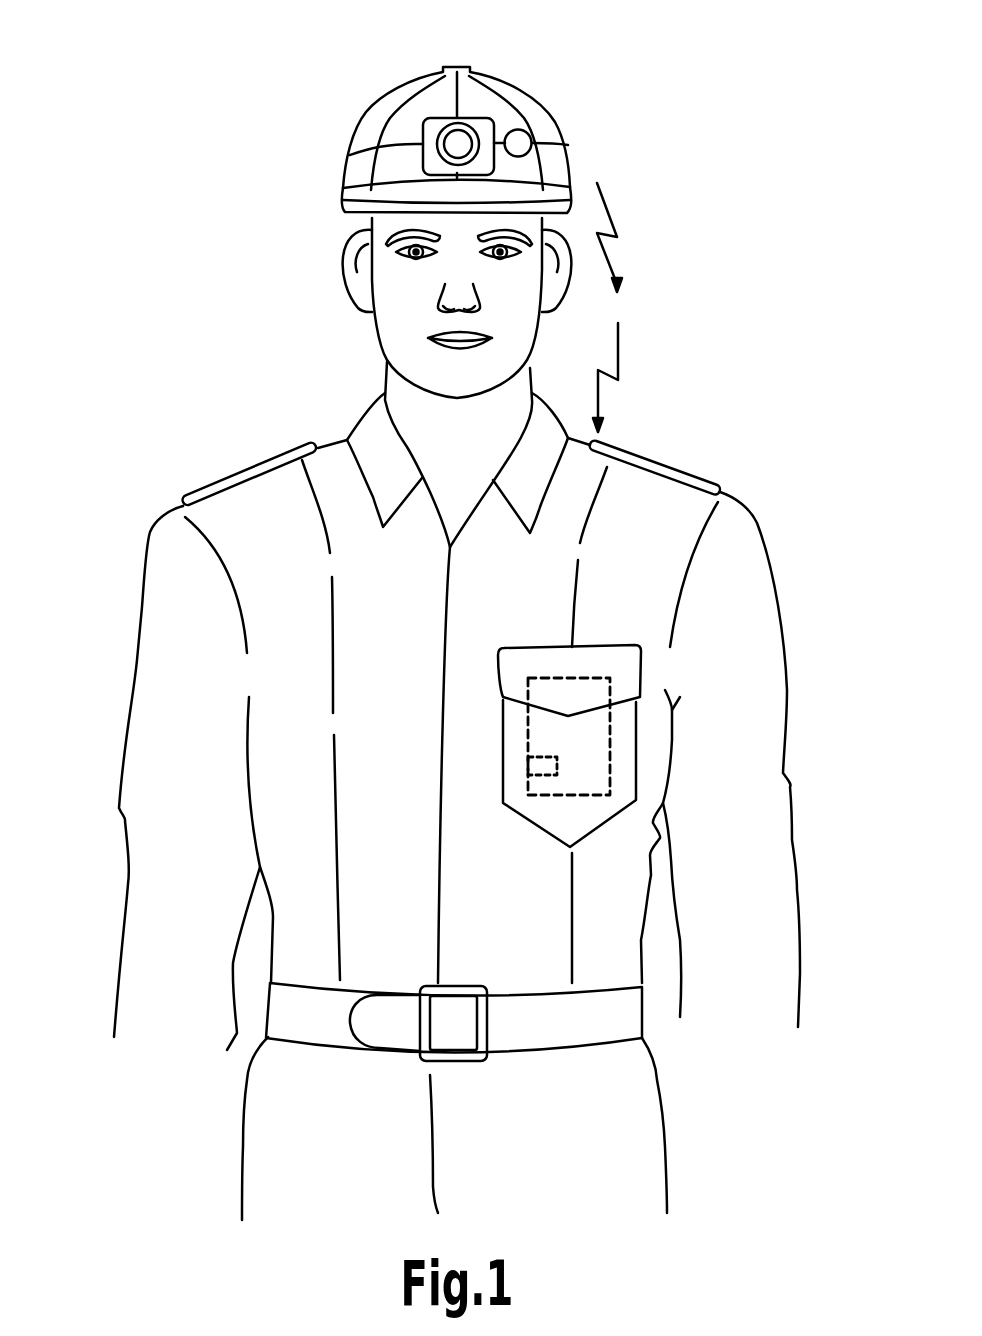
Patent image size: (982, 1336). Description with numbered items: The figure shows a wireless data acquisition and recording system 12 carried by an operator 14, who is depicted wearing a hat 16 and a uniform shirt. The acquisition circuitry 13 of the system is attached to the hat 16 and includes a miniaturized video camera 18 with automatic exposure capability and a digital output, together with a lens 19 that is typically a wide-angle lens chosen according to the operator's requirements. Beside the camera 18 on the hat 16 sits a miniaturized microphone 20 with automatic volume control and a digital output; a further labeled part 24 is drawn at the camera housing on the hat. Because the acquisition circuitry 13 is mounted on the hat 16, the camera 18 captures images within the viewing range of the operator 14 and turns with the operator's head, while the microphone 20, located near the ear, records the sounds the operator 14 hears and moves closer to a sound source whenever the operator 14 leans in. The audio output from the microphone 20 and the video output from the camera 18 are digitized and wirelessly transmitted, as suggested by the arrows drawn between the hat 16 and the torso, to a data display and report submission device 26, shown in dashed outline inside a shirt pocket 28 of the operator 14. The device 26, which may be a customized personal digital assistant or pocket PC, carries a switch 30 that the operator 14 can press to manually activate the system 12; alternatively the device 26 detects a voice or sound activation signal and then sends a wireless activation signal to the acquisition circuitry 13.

The wireless data acquisition and recording (DAR) system 12 is at (768, 87).
The acquisition circuitry 13 is at (555, 93).
The operator 14 is at (134, 660).
The hat 16 is at (370, 108).
The miniaturized video camera 18 is at (350, 155).
The lens 19 is at (427, 118).
The miniaturized microphone 20 is at (532, 143).
The camera lens 24 is at (493, 112).
The data display and report submission (DD) device 26 is at (547, 677).
The pocket 28 is at (528, 822).
The switch 30 is at (548, 755).